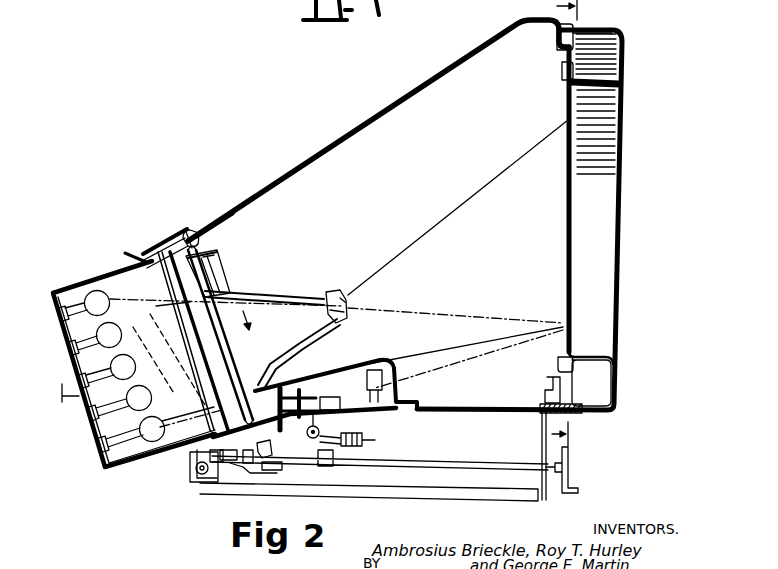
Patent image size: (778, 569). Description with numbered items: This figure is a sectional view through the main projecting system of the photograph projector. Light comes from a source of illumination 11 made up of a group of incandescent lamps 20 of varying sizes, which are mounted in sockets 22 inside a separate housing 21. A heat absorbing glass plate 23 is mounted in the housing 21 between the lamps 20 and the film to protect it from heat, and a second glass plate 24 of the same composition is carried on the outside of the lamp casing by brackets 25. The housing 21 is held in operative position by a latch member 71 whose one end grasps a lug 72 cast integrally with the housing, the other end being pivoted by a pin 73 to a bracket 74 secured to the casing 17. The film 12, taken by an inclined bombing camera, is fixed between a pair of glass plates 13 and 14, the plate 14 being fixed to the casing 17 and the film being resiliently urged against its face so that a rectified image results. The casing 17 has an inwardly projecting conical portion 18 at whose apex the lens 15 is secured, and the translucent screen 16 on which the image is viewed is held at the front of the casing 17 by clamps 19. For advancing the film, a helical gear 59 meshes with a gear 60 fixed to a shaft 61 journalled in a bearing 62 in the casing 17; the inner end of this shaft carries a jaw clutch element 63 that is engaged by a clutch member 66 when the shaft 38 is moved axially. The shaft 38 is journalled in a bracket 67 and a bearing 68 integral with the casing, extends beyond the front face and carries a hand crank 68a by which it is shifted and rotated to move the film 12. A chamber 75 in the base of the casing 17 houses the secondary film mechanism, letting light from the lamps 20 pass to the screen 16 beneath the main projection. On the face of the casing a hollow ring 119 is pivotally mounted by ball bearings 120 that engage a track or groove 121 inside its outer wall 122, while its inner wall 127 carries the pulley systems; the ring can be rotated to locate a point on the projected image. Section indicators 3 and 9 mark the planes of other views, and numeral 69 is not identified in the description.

The section line 3 is at (156, 356).
The section line 9 is at (570, 223).
The source of illumination 11 is at (87, 325).
The film 12 is at (231, 288).
The glass plate 13 is at (234, 346).
The glass plate 14 is at (240, 375).
The lens 15 is at (348, 305).
The translucent screen 16 is at (571, 264).
The casing 17 is at (360, 127).
The conical portion 18 is at (288, 292).
The clamps 19 is at (564, 76).
The incandescent lamps 20 is at (97, 292).
The housing 21 is at (94, 442).
The sockets 22 is at (108, 467).
The heat absorbing glass plate 23 is at (156, 306).
The second glass plate 24 is at (158, 296).
The brackets 25 is at (222, 272).
The shaft 38 is at (362, 462).
The helical gear 59 is at (200, 482).
The gear 60 is at (195, 470).
The shaft 61 is at (248, 465).
The bearing 62 is at (228, 462).
The jaw clutch element 63 is at (272, 472).
The clutch member 66 is at (258, 466).
The bracket 67 is at (268, 456).
The bearing 68 is at (540, 462).
The hand crank 68a is at (572, 461).
The bracket 69 is at (185, 458).
The latch member 71 is at (158, 235).
The lug 72 is at (143, 258).
The pin 73 is at (187, 228).
The bracket 74 is at (195, 227).
The chamber 75 is at (360, 364).
The hollow ring 119 is at (603, 202).
The ball bearings 120 is at (583, 410).
The track or groove 121 is at (618, 32).
The outer wall 122 is at (575, 26).
The inner wall 127 is at (620, 82).